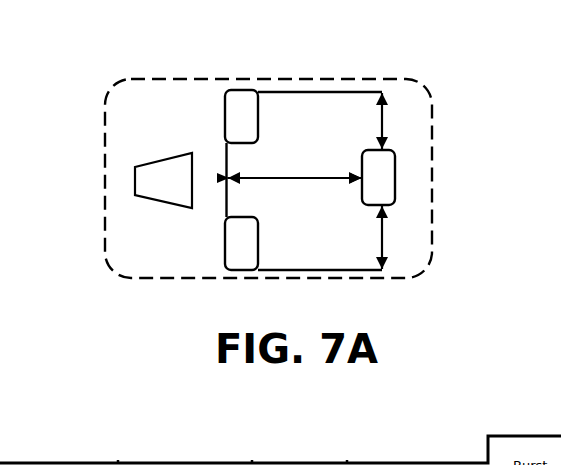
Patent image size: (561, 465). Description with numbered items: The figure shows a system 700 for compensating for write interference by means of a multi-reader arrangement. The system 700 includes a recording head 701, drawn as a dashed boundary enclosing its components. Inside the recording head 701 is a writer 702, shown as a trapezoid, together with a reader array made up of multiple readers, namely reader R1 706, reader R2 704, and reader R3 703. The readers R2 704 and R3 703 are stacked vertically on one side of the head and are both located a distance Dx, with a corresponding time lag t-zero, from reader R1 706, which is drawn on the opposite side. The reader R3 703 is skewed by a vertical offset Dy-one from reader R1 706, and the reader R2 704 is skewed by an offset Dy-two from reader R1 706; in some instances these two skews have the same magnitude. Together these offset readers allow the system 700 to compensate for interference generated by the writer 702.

The system 700 is at (103, 50).
The recording head 701 is at (122, 122).
The writer 702 is at (156, 170).
The reader R3 703 is at (240, 104).
The reader R2 704 is at (240, 257).
The reader R1 706 is at (385, 168).